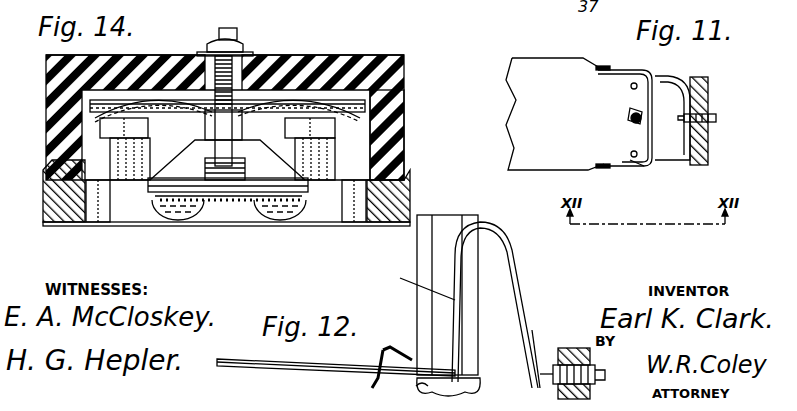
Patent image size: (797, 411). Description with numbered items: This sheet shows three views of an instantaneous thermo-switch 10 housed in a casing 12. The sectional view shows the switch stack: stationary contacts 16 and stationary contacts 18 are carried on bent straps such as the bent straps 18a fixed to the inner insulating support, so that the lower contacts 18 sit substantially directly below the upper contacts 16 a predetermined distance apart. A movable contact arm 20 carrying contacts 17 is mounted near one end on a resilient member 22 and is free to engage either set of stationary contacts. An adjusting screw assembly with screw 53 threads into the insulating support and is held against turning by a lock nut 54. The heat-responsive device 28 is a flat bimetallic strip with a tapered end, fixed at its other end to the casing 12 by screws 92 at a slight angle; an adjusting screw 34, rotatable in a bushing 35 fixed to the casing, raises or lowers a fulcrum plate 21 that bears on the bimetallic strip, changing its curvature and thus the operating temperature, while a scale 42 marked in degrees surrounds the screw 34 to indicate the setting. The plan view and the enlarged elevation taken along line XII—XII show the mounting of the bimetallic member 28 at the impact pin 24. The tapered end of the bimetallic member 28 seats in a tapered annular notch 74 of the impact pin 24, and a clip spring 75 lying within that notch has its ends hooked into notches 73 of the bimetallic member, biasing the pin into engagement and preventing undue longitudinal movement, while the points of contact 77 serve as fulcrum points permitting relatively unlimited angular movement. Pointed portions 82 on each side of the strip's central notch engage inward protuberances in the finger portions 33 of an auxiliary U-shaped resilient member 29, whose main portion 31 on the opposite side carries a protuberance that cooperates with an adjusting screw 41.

In FIG. 14, the instantaneous thermo-switch 10 is at (26, 60).
In FIG. 14, the casing 12 is at (406, 196).
In FIG. 14, the stationary contacts 16 is at (350, 53).
In FIG. 14, the contacts 17 is at (384, 52).
In FIG. 14, the stationary contacts 18 is at (117, 133).
In FIG. 14, the bent straps 18a is at (118, 136).
In FIG. 14, the movable contact arm 20 is at (316, 53).
In FIG. 14, the fulcrum plate 21 is at (252, 198).
In FIG. 14, the resilient member 22 is at (250, 126).
In FIG. 11, the impact pin 24 is at (630, 118).
In FIG. 12, the impact pin 24 is at (478, 222).
In FIG. 14, the heat-responsive device 28 is at (233, 192).
In FIG. 11, the heat-responsive device 28 is at (530, 70).
In FIG. 12, the heat-responsive device 28 is at (265, 362).
In FIG. 11, the auxiliary U-shaped resilient member 29 is at (700, 166).
In FIG. 12, the auxiliary U-shaped resilient member 29 is at (530, 352).
In FIG. 11, the main portion 31 is at (684, 80).
In FIG. 12, the main portion 31 is at (530, 304).
In FIG. 11, the finger portions 33 is at (655, 76).
In FIG. 12, the finger portions 33 is at (450, 300).
In FIG. 14, the adjusting screw 34 is at (214, 196).
In FIG. 14, the bushing 35 is at (196, 160).
In FIG. 11, the adjusting screw 41 is at (712, 114).
In FIG. 12, the adjusting screw 41 is at (558, 356).
In FIG. 14, the scale 42 is at (205, 122).
In FIG. 14, the screw 53 is at (236, 32).
In FIG. 14, the lock nut 54 is at (246, 49).
In FIG. 11, the notches 73 is at (598, 66).
In FIG. 12, the notches 73 is at (352, 378).
In FIG. 12, the tapered annular notch 74 is at (472, 380).
In FIG. 11, the clip spring 75 is at (636, 160).
In FIG. 12, the clip spring 75 is at (387, 346).
In FIG. 11, the points of contact 77 is at (630, 112).
In FIG. 11, the pointed portions 82 is at (630, 86).
In FIG. 12, the pointed portions 82 is at (418, 382).
In FIG. 14, the screws 92 is at (178, 216).